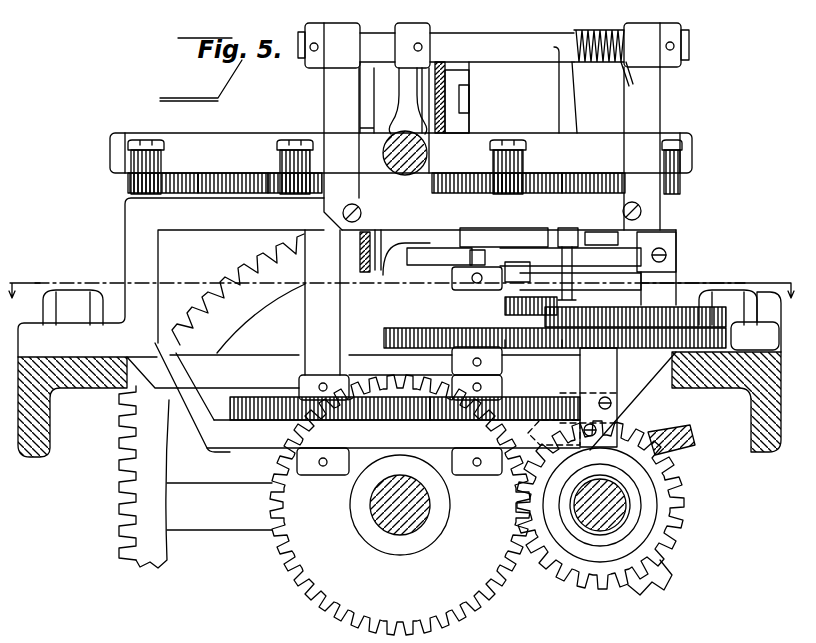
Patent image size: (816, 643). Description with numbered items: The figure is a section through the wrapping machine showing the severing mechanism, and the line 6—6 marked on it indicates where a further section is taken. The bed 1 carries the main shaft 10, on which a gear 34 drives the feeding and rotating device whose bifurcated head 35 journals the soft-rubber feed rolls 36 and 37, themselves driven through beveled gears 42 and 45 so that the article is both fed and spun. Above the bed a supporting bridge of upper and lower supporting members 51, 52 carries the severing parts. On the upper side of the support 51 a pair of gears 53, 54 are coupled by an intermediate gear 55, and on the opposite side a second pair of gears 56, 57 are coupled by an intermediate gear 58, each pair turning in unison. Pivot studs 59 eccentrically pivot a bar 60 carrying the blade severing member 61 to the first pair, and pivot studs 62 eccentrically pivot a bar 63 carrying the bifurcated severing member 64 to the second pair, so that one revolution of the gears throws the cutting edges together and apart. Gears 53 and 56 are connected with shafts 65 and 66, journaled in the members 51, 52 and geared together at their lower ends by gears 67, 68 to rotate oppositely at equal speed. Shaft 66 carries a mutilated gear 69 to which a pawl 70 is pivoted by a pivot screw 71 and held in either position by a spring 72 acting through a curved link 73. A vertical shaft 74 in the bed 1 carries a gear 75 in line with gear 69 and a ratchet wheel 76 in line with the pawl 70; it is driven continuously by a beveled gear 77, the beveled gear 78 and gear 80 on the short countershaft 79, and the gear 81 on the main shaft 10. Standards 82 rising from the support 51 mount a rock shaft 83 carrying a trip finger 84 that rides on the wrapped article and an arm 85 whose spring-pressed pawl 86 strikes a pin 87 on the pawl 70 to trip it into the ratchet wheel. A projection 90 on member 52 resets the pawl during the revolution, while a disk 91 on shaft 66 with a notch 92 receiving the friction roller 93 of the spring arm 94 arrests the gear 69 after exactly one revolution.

The bed 1 is at (62, 390).
The section line 6 is at (401, 279).
The main shaft 10 is at (376, 512).
The gear 34 is at (167, 555).
The bifurcated head 35 is at (470, 70).
The feed roll 36 is at (372, 113).
The feed roll 37 is at (362, 213).
The beveled gear 42 is at (432, 128).
The beveled gear 45 is at (340, 258).
The upper supporting member 51 is at (228, 228).
The lower supporting member 52 is at (193, 440).
The gear 53 is at (300, 194).
The gear 54 is at (174, 194).
The intermediate gear 55 is at (240, 194).
The gear 56 is at (462, 194).
The gear 57 is at (608, 194).
The intermediate gear 58 is at (524, 194).
The pivot studs 59 is at (148, 140).
The bar 60 is at (238, 142).
The severing member 61 is at (374, 166).
The pivot studs 62 is at (505, 140).
The bar 63 is at (584, 130).
The severing member 64 is at (478, 100).
The shaft 65 is at (302, 313).
The shaft 66 is at (455, 232).
The gear 67 is at (291, 420).
The gear 68 is at (472, 420).
The mutilated gear 69 is at (384, 339).
The pawl 70 is at (511, 292).
The pivot screw 71 is at (535, 306).
The spring 72 is at (506, 348).
The curved link 73 is at (562, 348).
The vertically extending shaft 74 is at (636, 203).
The gear 75 is at (731, 336).
The ratchet wheel 76 is at (700, 292).
The beveled gear 77 is at (672, 428).
The beveled gear 78 is at (686, 513).
The short countershaft 79 is at (584, 532).
The gear 80 is at (592, 560).
The gear 81 is at (478, 598).
The standards 82 is at (322, 85).
The rock shaft 83 is at (472, 36).
The trip finger 84 is at (398, 88).
The arm 85 is at (557, 100).
The spring-pressed pawl 86 is at (582, 274).
The pin 87 is at (565, 245).
The projection 90 is at (633, 290).
The disk 91 is at (408, 265).
The notch 92 is at (450, 284).
The friction roller 93 is at (487, 248).
The spring arm 94 is at (645, 248).